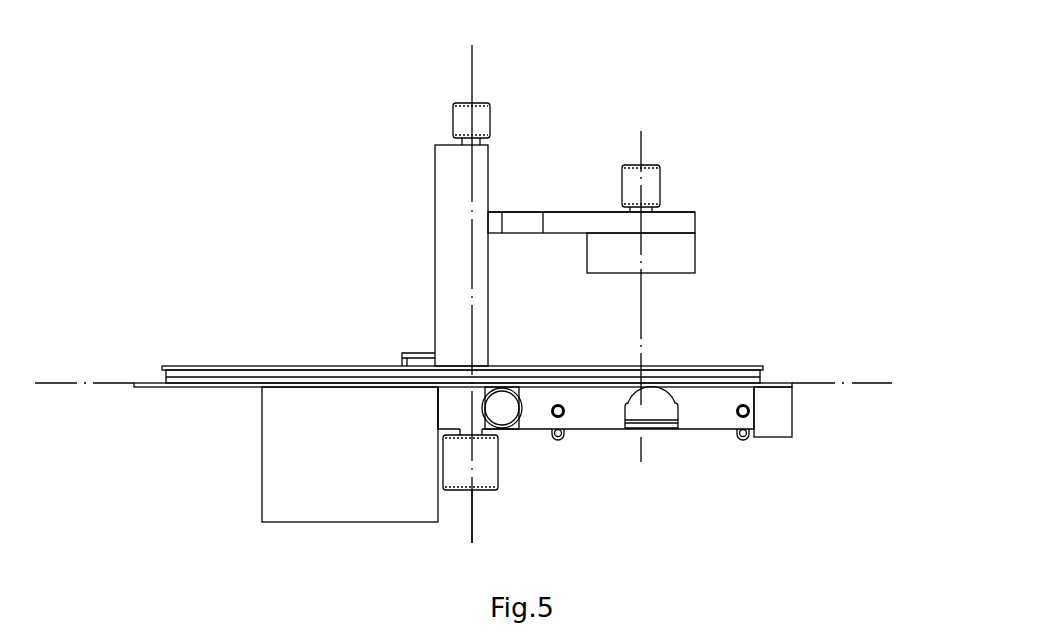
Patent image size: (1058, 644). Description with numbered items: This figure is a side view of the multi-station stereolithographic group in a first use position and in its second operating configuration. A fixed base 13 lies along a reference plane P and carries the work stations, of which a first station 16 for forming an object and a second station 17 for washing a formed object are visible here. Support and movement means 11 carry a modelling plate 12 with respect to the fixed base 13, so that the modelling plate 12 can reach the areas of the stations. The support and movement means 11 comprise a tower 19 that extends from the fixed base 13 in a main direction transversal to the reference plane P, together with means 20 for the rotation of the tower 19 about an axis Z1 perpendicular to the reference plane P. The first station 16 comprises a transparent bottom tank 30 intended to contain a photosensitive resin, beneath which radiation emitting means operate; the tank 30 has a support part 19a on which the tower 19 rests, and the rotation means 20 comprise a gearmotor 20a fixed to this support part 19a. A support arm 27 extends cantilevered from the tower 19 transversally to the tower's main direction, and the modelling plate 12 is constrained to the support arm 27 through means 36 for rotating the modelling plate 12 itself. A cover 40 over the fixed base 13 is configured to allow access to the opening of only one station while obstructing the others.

The support and movement means 11 is at (591, 169).
The modelling plate 12 is at (677, 257).
The fixed base 13 is at (463, 421).
The first station 16 is at (780, 451).
The second station 17 is at (350, 494).
The tower 19 is at (434, 183).
The support part 19a is at (458, 413).
The means for the rotation of the tower 20 is at (509, 466).
The gearmotor 20a is at (487, 472).
The support arm 27 is at (673, 220).
The transparent bottom tank 30 is at (596, 451).
The means for the rotation of the modelling plate 36 is at (673, 161).
The cover 40 is at (213, 367).
The axis Z1 is at (474, 72).
The reference plane P is at (877, 383).